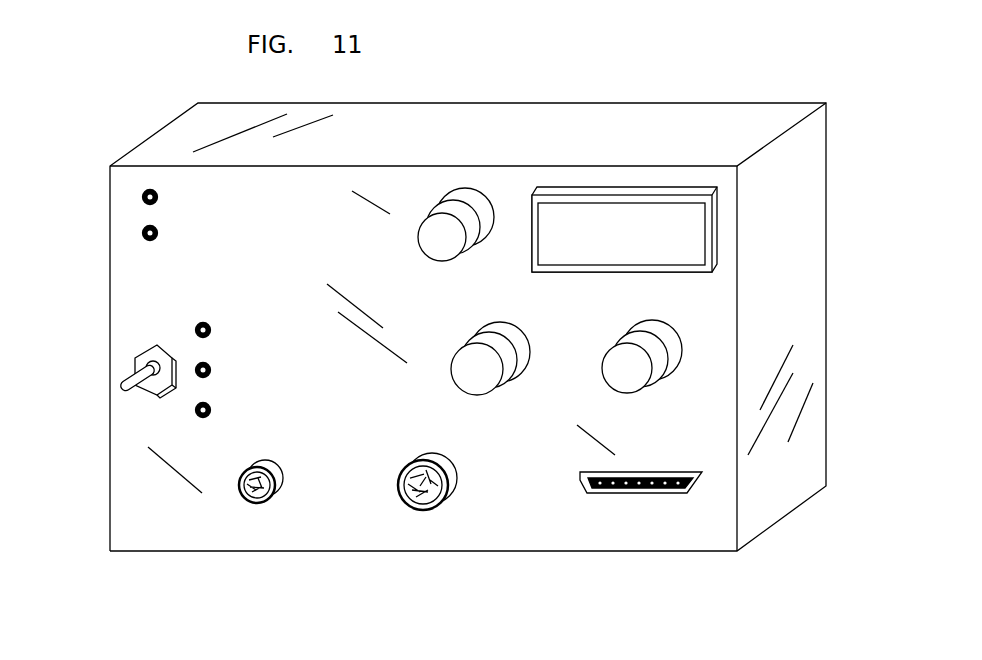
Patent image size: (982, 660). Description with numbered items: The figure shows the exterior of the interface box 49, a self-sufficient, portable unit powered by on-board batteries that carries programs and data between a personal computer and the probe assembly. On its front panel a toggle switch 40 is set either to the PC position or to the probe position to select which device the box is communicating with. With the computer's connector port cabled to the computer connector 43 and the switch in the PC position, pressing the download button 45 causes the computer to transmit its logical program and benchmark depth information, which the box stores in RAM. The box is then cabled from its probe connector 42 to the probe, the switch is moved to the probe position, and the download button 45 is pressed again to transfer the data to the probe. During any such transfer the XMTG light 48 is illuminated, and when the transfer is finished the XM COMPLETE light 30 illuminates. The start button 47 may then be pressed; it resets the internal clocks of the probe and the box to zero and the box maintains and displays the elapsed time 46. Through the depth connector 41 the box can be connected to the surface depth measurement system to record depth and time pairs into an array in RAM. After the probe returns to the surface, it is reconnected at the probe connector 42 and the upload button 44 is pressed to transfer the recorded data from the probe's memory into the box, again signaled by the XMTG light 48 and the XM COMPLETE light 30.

The interface box 49 is at (149, 105).
The XMTG light 48 is at (83, 233).
The XM COMPLETE light 30 is at (83, 271).
The toggle switch 40 is at (103, 397).
The start button 47 is at (552, 156).
The elapsed time display 46 is at (682, 157).
The download button 45 is at (553, 458).
The upload button 44 is at (719, 435).
The depth connector 41 is at (185, 531).
The probe connector 42 is at (351, 522).
The computer connector 43 is at (694, 533).